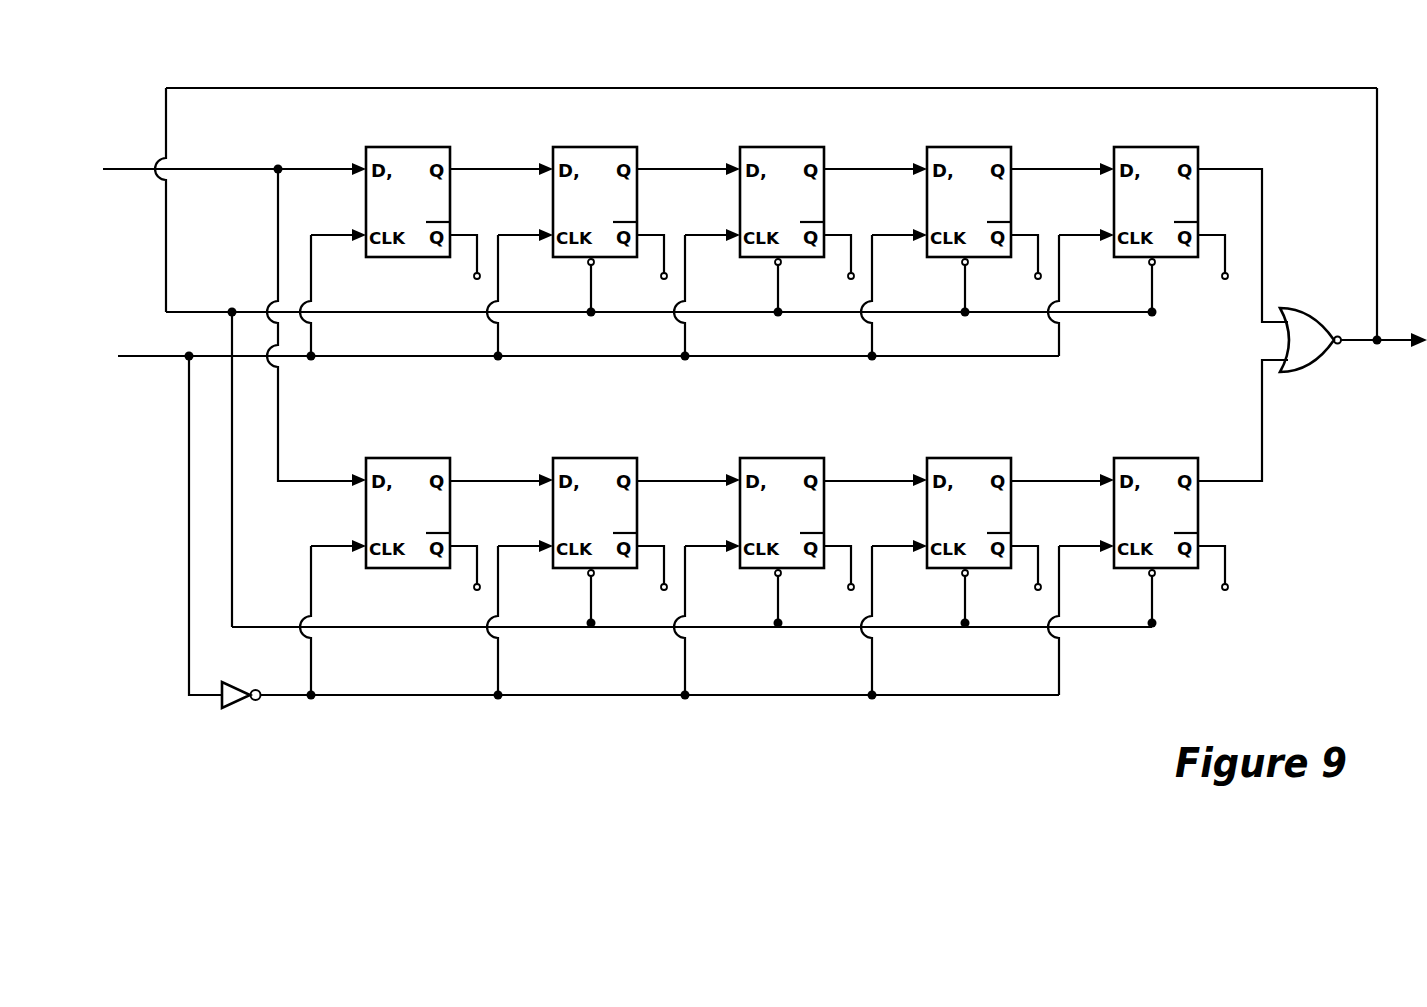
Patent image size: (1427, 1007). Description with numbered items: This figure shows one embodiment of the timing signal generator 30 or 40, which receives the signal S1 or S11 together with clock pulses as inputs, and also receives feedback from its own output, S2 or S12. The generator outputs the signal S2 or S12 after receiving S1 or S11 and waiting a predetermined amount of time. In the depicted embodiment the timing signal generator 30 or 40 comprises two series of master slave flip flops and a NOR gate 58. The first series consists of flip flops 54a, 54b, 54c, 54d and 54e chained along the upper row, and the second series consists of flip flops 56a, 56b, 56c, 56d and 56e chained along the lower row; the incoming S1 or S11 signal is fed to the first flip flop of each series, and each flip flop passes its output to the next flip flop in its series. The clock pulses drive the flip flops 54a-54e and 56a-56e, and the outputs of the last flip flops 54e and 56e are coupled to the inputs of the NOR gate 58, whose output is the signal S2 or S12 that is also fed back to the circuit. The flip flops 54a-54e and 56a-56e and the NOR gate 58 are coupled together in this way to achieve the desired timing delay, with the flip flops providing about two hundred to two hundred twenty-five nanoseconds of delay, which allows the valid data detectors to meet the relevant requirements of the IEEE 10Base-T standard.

The timing signal generator 30 is at (740, 398).
The timing signal generator 40 is at (1398, 601).
The master slave flip flop 54a is at (393, 140).
The master slave flip flop 54b is at (580, 140).
The master slave flip flop 54c is at (767, 140).
The master slave flip flop 54d is at (954, 140).
The master slave flip flop 54e is at (1141, 140).
The master slave flip flop 56a is at (393, 451).
The master slave flip flop 56b is at (580, 451).
The master slave flip flop 56c is at (767, 451).
The master slave flip flop 56d is at (954, 451).
The master slave flip flop 56e is at (1141, 451).
The NOR gate 58 is at (1313, 307).